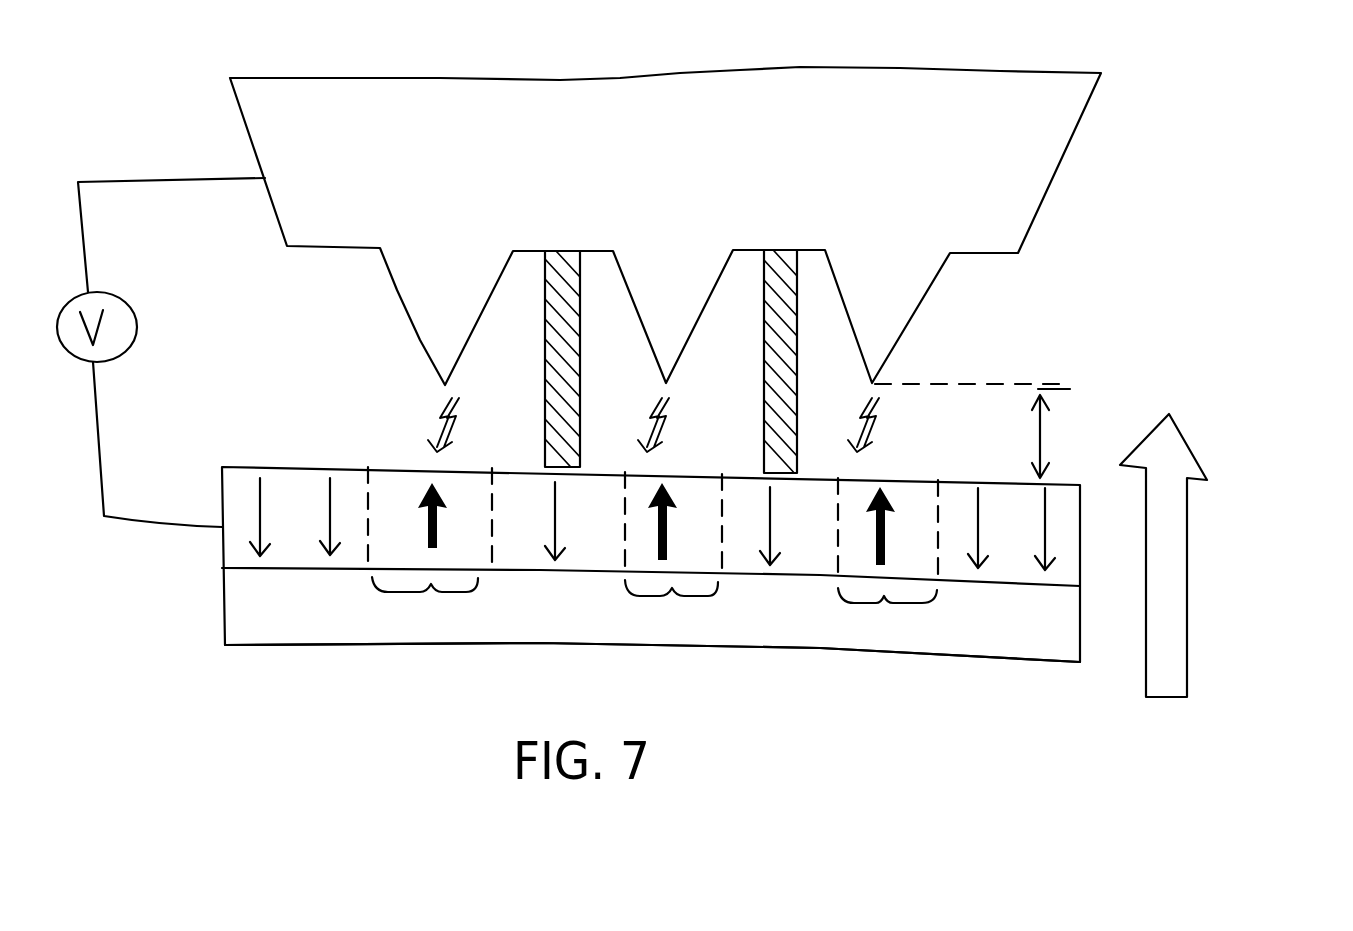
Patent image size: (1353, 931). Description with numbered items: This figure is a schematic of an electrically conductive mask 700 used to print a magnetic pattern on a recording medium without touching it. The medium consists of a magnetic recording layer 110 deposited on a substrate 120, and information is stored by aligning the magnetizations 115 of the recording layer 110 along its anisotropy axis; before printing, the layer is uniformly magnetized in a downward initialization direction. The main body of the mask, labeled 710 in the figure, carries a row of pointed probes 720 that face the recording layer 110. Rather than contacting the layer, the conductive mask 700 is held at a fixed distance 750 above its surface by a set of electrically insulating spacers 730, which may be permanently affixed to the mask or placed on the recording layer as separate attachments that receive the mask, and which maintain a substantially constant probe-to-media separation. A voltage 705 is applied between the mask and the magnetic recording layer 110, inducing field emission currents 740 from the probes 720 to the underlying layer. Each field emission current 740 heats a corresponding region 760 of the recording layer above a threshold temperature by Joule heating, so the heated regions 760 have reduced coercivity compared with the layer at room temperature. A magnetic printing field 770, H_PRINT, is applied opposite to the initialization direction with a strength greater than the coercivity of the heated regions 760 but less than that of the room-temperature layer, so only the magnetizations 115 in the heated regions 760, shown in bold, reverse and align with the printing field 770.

The conductive mask 700 is at (533, 176).
The voltage 705 is at (112, 290).
The mask body 710 is at (1063, 163).
The probes 720 is at (398, 300).
The electrically insulating spacers 730 is at (545, 372).
The field emission currents 740 is at (428, 413).
The fixed distance 750 is at (987, 431).
The heated regions 760 is at (653, 553).
The magnetic printing field 770 is at (1235, 592).
The magnetic recording layer 110 is at (217, 490).
The magnetizations 115 is at (253, 490).
The substrate 120 is at (223, 597).